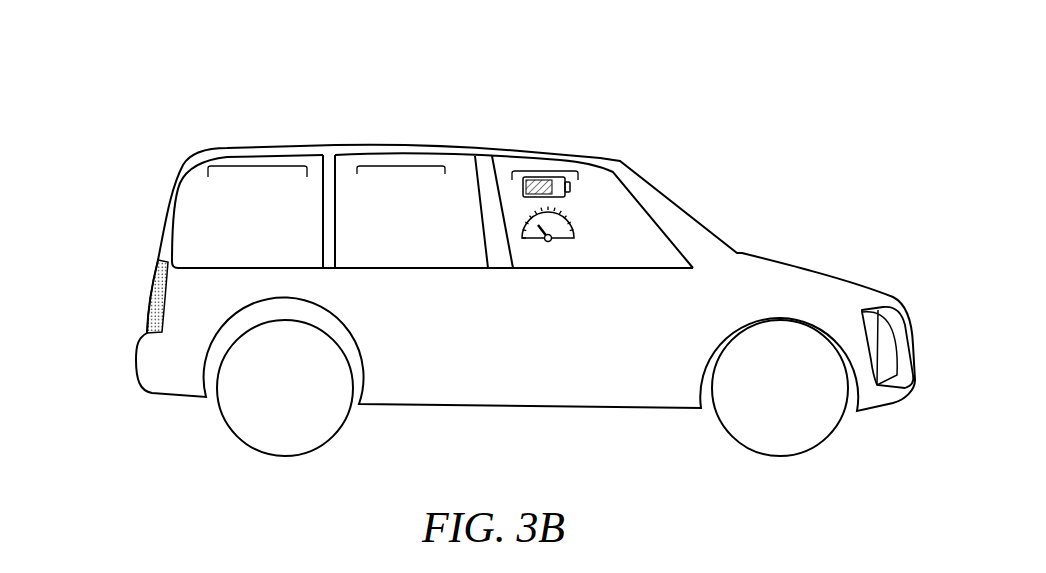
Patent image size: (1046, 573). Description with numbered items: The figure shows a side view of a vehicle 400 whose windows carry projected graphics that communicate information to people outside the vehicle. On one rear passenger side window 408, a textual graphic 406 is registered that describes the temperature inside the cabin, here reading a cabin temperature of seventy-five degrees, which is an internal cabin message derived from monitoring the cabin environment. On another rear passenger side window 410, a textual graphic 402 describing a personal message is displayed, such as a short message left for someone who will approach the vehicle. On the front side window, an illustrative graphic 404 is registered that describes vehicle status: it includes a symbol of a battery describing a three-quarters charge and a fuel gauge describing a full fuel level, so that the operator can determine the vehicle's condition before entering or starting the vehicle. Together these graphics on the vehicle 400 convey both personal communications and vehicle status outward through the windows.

The vehicle 400 is at (264, 82).
The textual graphic 402 is at (402, 165).
The illustrative graphic 404 is at (548, 169).
The textual graphic 406 is at (258, 164).
The rear passenger side window 408 is at (174, 207).
The rear passenger side window 410 is at (328, 160).